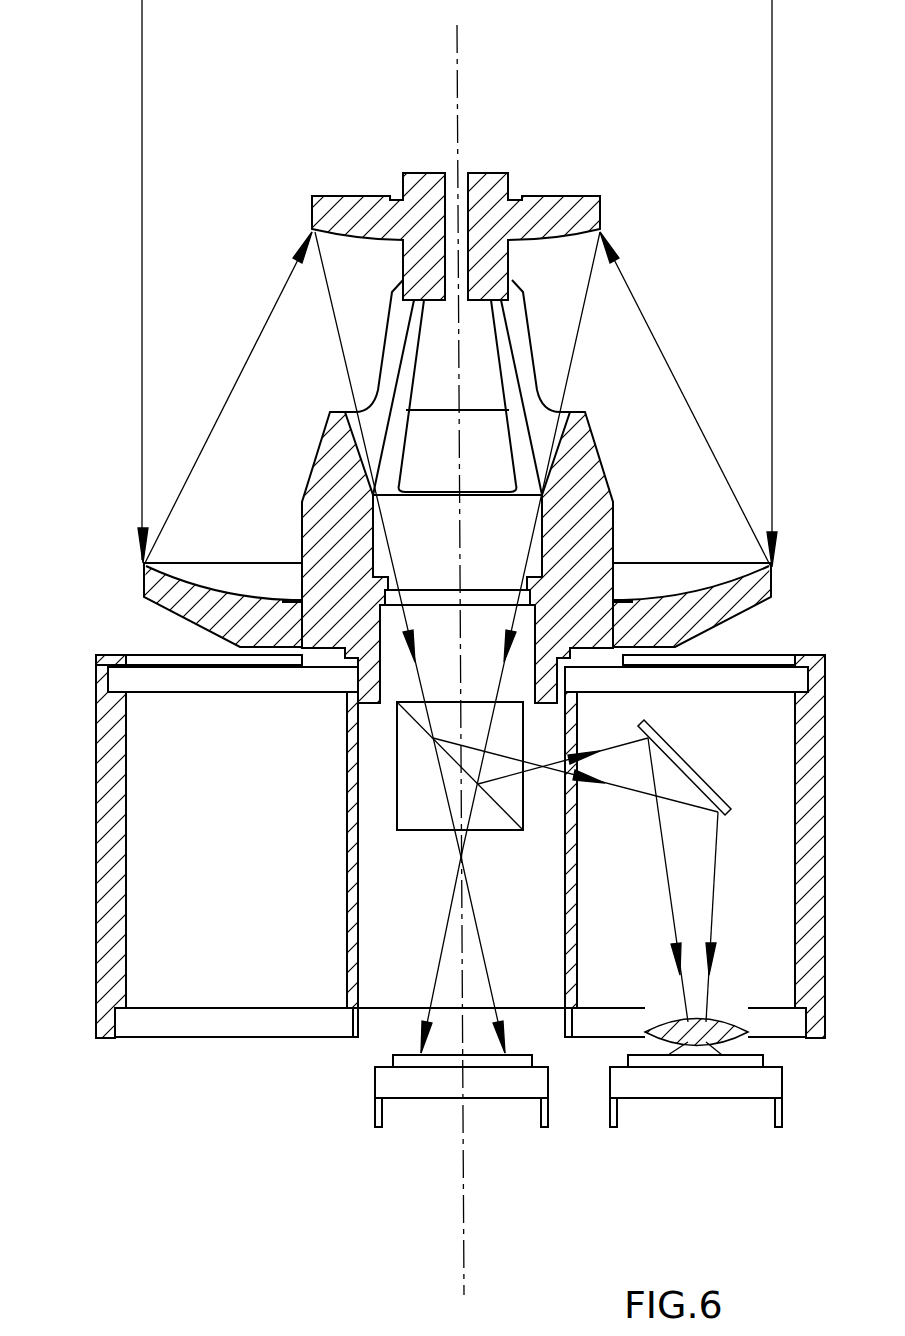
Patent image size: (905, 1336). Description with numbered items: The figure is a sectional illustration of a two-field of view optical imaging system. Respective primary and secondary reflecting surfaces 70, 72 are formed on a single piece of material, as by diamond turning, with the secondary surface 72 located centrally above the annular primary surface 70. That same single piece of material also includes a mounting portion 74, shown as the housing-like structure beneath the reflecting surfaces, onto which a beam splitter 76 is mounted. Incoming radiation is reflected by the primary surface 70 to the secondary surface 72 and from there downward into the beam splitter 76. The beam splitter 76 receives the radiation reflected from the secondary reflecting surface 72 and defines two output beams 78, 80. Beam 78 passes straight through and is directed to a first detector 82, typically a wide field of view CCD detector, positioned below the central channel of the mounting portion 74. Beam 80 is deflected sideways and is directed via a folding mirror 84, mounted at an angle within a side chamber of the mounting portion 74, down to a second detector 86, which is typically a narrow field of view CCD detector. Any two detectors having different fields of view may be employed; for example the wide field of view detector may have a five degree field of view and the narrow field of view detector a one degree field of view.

The primary surface 70 is at (217, 583).
The secondary surface 72 is at (553, 240).
The mounting portion 74 is at (103, 935).
The beam splitter 76 is at (407, 788).
The output beam 78 is at (470, 948).
The output beam 80 is at (638, 767).
The first detector 82 is at (480, 1087).
The folding mirror 84 is at (697, 777).
The second detector 86 is at (700, 1098).